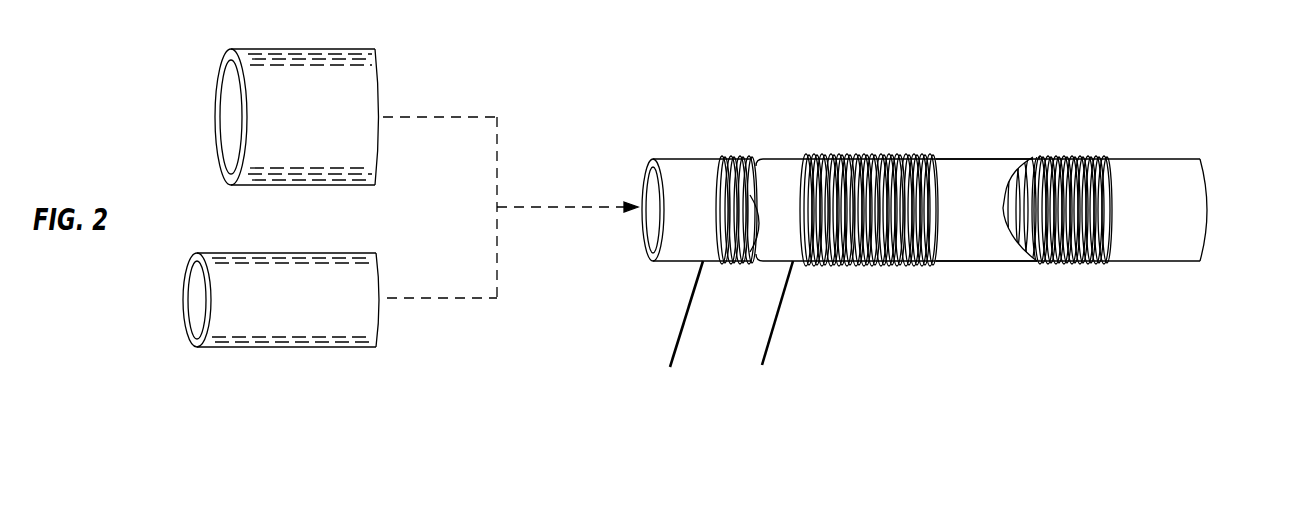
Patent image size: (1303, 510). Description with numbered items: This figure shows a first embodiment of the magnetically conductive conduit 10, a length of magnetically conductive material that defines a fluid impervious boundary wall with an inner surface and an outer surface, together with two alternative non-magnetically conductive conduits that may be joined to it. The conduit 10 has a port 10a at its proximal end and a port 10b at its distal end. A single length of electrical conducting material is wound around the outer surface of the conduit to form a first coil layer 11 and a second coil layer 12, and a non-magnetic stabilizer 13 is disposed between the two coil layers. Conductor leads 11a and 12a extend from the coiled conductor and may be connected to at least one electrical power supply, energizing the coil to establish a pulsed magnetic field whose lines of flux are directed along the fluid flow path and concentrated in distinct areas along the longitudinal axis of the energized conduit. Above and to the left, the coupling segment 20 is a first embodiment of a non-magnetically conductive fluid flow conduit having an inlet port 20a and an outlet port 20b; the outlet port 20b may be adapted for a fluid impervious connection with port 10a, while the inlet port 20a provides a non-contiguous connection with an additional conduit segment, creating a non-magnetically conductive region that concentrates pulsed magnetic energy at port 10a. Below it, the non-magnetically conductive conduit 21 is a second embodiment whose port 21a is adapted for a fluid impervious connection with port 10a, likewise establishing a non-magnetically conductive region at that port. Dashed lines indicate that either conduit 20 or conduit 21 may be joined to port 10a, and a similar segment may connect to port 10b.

The magnetically conductive conduit 10 is at (702, 217).
The port 10a is at (615, 196).
The port 10b is at (1251, 238).
The first coil layer 11 is at (1052, 184).
The conductor lead 11a is at (676, 270).
The second coil layer 12 is at (869, 182).
The conductor lead 12a is at (813, 324).
The non-magnetic stabilizer 13 is at (994, 220).
The coupling segment 20 is at (322, 127).
The inlet port 20a is at (197, 113).
The outlet port 20b is at (418, 113).
The non-magnetically conductive conduit 21 is at (303, 315).
The port 21a is at (421, 315).